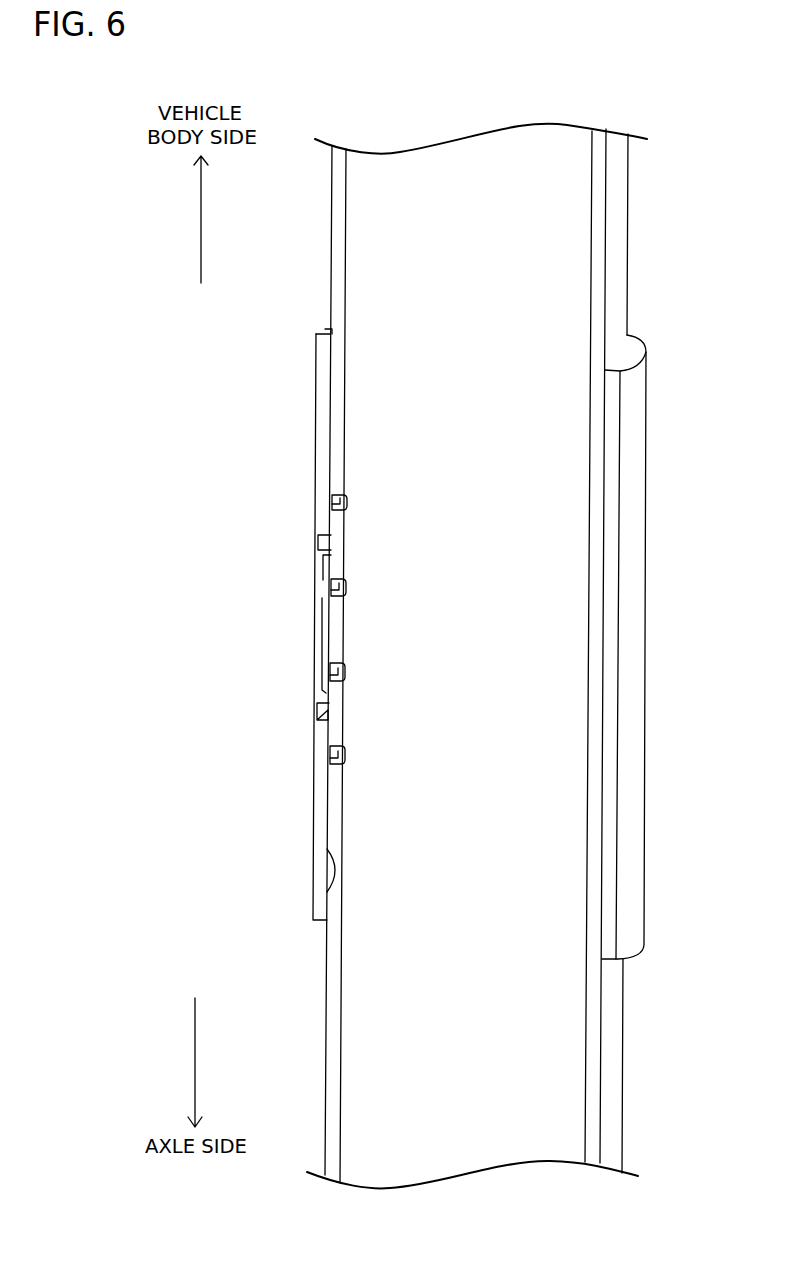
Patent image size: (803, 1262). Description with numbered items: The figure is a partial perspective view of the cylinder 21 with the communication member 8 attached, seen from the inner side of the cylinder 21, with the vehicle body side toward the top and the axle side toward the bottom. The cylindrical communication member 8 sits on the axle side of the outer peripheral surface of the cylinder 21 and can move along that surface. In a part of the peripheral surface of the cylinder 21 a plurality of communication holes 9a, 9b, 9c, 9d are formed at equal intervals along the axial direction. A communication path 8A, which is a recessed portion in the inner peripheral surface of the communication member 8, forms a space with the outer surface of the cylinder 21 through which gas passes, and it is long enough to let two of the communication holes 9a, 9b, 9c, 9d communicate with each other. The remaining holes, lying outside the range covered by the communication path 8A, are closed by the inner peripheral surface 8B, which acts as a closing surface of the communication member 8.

The cylinder 21 is at (324, 197).
The communication member 8 is at (307, 438).
The communication path 8A is at (325, 633).
The inner peripheral surface (closing surface) 8B is at (327, 892).
The communication hole 9a is at (334, 508).
The communication hole 9b is at (334, 588).
The communication hole 9c is at (334, 675).
The communication hole 9d is at (334, 753).